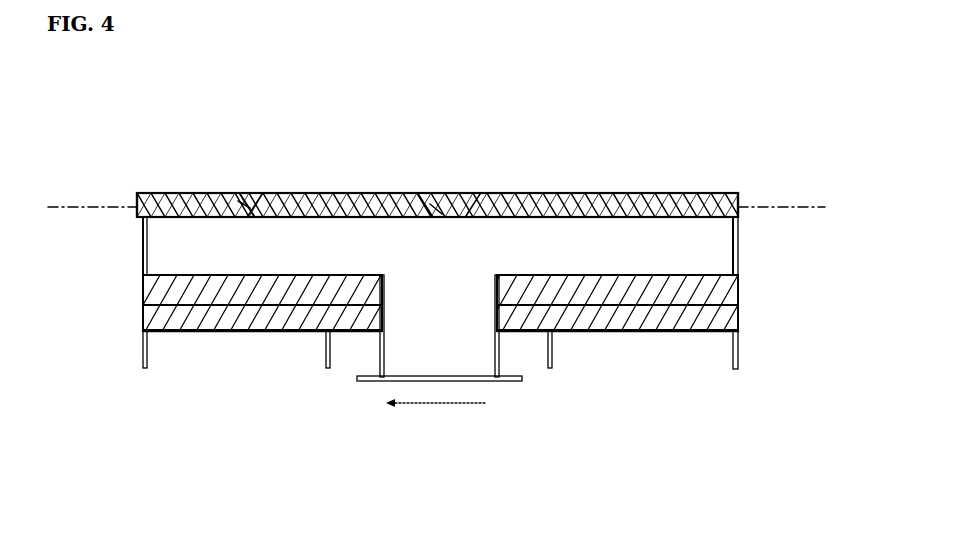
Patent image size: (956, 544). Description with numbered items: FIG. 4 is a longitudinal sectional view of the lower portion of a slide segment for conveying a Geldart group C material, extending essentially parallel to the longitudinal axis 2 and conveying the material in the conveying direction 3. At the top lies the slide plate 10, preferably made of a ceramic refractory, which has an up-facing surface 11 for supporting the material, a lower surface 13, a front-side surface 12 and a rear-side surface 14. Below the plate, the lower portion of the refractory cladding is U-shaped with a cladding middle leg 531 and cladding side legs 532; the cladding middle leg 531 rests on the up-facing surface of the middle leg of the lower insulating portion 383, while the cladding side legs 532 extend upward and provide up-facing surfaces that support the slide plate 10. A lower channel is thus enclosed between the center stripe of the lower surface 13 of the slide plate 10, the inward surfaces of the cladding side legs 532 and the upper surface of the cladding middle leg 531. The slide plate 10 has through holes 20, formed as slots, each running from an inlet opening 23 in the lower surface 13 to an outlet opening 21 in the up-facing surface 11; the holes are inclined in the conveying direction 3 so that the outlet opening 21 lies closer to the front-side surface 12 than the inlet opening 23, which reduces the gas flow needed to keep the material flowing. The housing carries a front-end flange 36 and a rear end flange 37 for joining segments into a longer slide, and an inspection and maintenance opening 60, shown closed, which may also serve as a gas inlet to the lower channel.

The longitudinal axis 2 is at (436, 218).
The conveying direction 3 is at (435, 414).
The slide plate 10 is at (233, 205).
The up-facing surface 11 is at (172, 191).
The front-side surface 12 is at (142, 203).
The lower surface 13 is at (350, 219).
The rear-side surface 14 is at (742, 204).
The through holes 20 is at (245, 207).
The outlet opening 21 is at (240, 205).
The inlet opening 23 is at (243, 203).
The front-end flange 36 is at (143, 363).
The rear end flange 37 is at (738, 346).
The inspection and maintenance opening 60 is at (470, 355).
The lower insulating portion 383 is at (283, 318).
The cladding middle leg 531 is at (240, 292).
The cladding side legs 532 is at (193, 253).